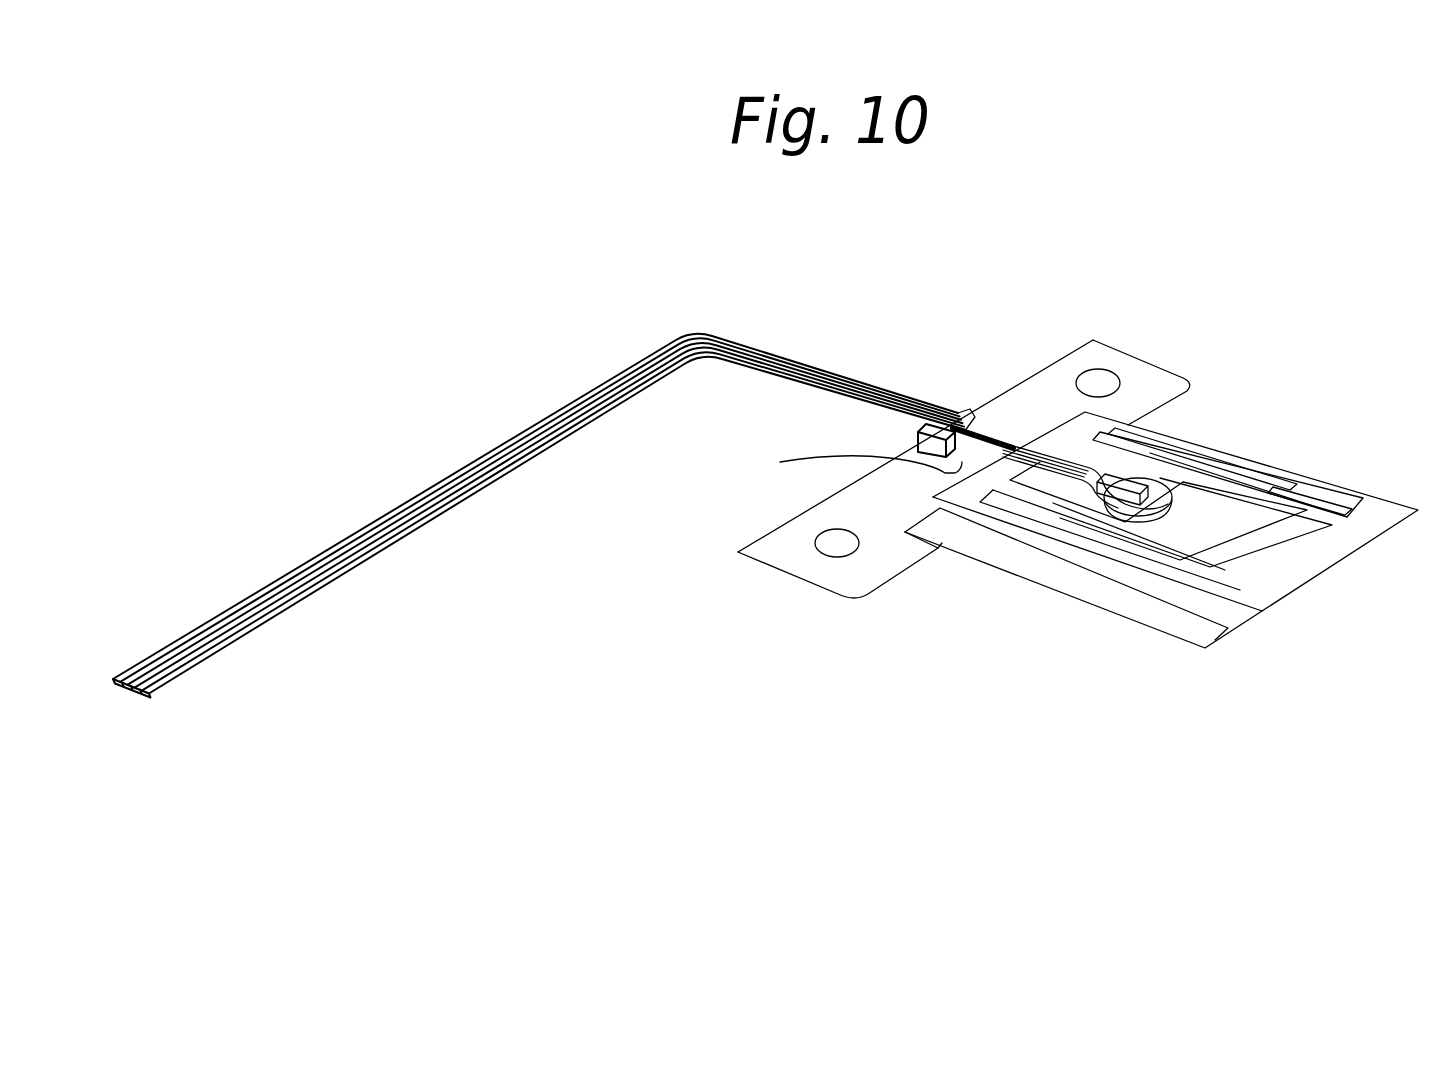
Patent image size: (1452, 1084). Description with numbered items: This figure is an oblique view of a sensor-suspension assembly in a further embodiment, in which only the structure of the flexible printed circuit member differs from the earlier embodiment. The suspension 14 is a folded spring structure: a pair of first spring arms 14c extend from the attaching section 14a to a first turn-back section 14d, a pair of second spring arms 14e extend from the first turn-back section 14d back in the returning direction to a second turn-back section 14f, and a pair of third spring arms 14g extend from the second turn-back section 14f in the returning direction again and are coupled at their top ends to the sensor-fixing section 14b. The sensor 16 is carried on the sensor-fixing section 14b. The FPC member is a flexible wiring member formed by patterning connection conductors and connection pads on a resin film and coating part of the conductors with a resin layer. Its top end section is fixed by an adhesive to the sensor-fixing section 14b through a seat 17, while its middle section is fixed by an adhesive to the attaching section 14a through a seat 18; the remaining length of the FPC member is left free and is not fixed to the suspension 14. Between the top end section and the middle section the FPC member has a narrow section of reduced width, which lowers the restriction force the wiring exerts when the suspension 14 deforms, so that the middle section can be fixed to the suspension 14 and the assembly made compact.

The suspension 14 is at (1270, 385).
The attaching section 14a is at (1023, 406).
The sensor-fixing section 14b is at (1223, 528).
The first spring arms 14c is at (1283, 475).
The first turn-back section 14d is at (1308, 563).
The second spring arms 14e is at (1323, 518).
The second turn-back section 14f is at (938, 548).
The third spring arms 14g is at (1163, 470).
The electronic element 16 is at (1135, 478).
The seat 17 is at (1160, 520).
The seat 18 is at (962, 420).